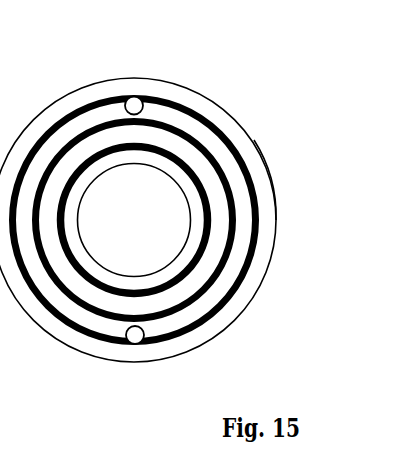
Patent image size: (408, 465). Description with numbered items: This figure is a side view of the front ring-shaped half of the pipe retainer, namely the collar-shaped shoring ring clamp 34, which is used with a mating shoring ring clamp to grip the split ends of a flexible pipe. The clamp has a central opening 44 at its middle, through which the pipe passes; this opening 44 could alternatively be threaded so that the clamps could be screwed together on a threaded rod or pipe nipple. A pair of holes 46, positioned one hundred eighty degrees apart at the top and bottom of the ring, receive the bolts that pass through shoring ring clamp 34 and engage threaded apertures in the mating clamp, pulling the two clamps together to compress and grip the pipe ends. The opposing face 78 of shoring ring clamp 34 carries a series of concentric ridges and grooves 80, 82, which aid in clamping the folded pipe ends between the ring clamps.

The shoring ring clamp 34 is at (227, 110).
The central opening 44 is at (134, 220).
The holes 46 is at (135, 96).
The opposing face 78 is at (270, 196).
The ridges 80 is at (257, 257).
The grooves 82 is at (228, 304).